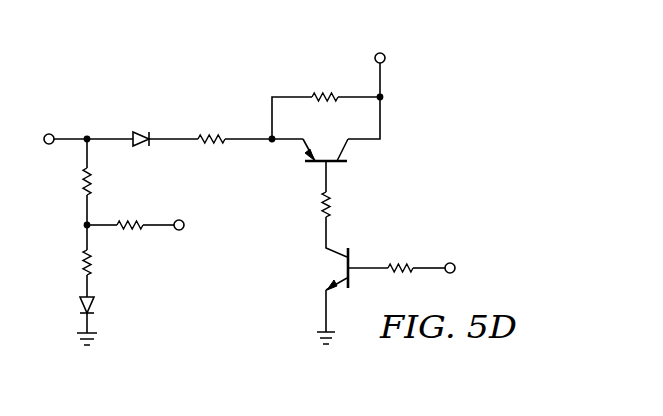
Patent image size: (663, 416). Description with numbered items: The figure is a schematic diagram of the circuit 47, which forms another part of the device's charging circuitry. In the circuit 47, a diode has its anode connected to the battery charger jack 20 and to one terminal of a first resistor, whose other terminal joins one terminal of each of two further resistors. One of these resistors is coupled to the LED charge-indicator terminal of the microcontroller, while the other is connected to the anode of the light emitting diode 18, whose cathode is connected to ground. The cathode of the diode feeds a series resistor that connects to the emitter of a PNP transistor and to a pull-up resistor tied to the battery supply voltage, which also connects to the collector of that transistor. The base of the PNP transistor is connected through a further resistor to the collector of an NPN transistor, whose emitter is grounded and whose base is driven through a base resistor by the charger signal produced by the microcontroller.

The circuit 47 is at (242, 74).
The battery charger jack 20 is at (46, 133).
The light emitting diode 18 is at (78, 305).